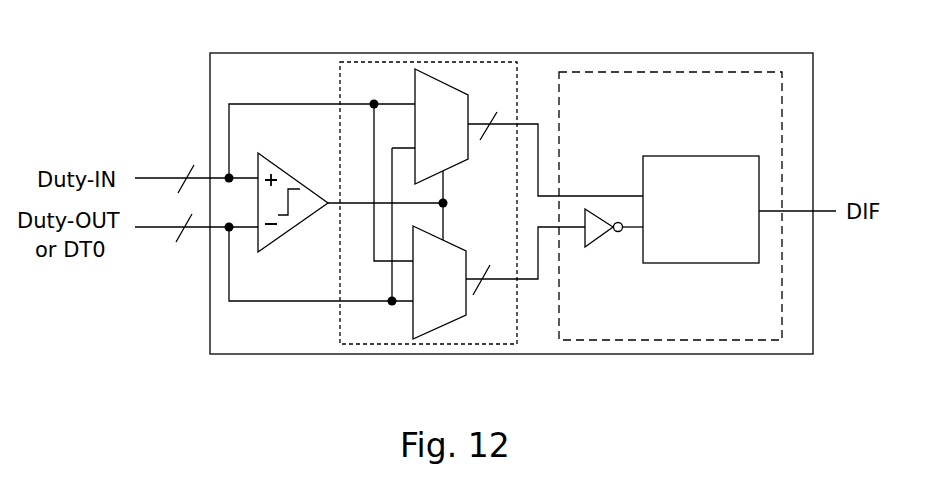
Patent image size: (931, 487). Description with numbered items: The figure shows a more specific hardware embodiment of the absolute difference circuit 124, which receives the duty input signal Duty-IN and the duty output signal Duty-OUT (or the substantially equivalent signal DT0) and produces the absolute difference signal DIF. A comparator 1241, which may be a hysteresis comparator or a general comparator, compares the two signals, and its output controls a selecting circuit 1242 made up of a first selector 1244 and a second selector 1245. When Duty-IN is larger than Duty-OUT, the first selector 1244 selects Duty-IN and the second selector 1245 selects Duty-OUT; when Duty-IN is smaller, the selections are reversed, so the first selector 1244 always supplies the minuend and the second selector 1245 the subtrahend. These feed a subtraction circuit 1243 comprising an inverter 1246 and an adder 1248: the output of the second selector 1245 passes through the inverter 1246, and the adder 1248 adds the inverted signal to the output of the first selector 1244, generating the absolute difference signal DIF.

The absolute difference circuit 124 is at (283, 342).
The comparator 1241 is at (274, 167).
The selecting circuit 1242 is at (392, 62).
The subtraction circuit 1243 is at (754, 109).
The first selector 1244 is at (444, 83).
The second selector 1245 is at (440, 326).
The inverter 1246 is at (590, 243).
The adder 1248 is at (673, 238).